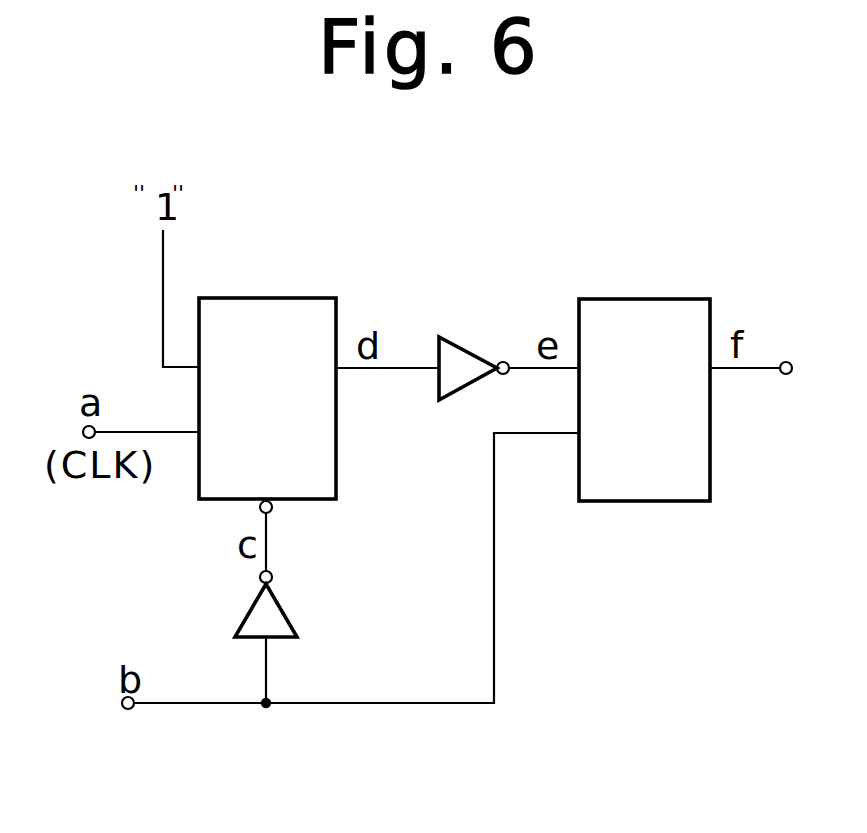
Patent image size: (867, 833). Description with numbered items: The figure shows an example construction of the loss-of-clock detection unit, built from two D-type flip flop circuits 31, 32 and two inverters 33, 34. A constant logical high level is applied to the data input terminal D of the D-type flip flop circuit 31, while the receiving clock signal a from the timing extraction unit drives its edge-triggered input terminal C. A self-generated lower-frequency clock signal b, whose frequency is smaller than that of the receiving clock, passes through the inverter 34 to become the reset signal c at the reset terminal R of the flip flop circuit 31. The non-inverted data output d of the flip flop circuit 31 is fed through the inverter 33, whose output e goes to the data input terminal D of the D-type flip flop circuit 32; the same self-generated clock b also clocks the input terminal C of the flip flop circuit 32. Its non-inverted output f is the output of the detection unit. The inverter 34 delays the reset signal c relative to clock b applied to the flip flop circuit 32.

The D-type flip flop circuit 31 is at (256, 298).
The D-type flip flop circuit 32 is at (643, 299).
The inverter 33 is at (482, 357).
The inverter 34 is at (289, 601).